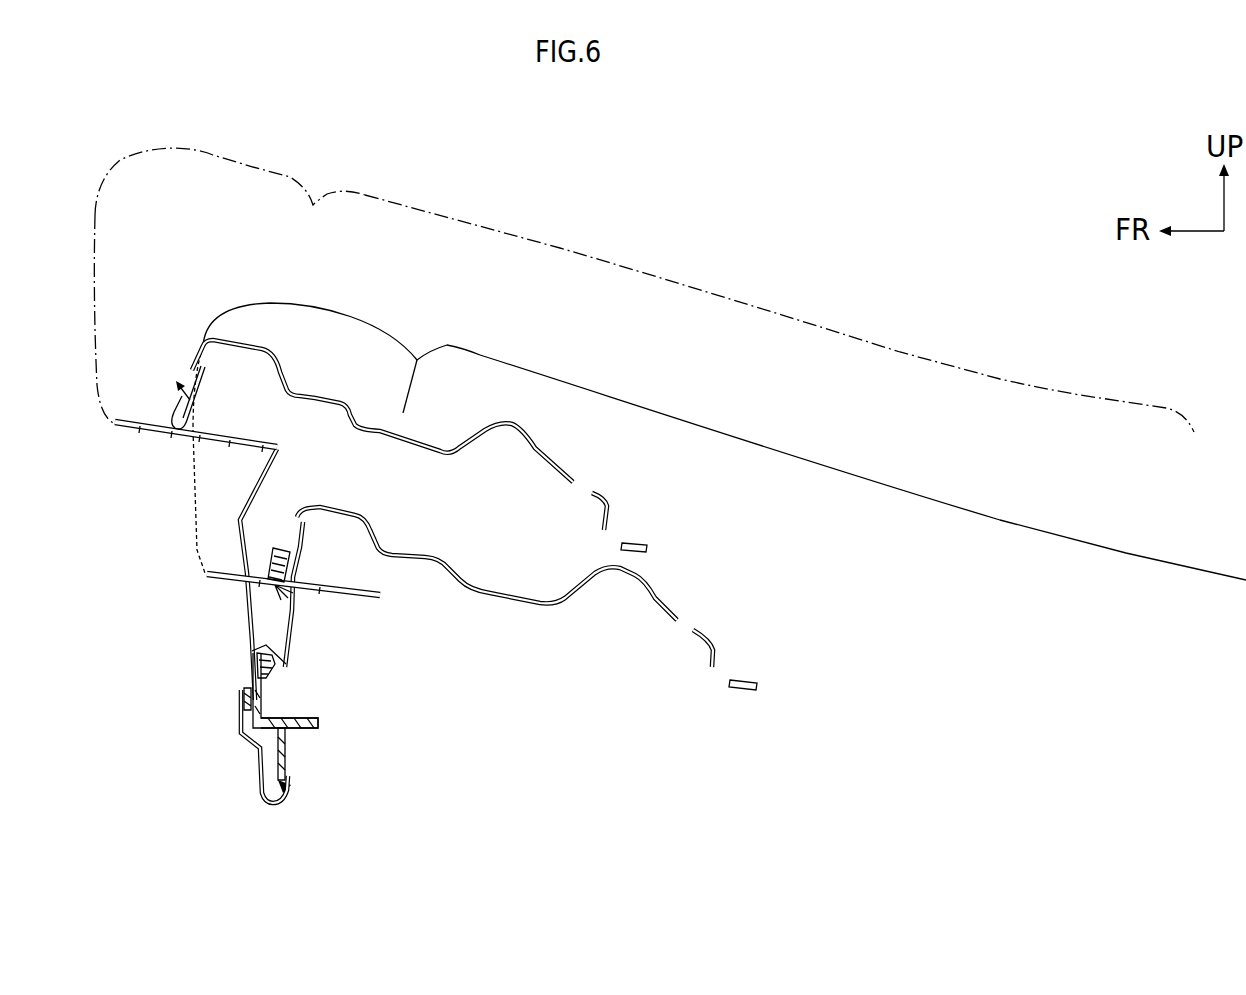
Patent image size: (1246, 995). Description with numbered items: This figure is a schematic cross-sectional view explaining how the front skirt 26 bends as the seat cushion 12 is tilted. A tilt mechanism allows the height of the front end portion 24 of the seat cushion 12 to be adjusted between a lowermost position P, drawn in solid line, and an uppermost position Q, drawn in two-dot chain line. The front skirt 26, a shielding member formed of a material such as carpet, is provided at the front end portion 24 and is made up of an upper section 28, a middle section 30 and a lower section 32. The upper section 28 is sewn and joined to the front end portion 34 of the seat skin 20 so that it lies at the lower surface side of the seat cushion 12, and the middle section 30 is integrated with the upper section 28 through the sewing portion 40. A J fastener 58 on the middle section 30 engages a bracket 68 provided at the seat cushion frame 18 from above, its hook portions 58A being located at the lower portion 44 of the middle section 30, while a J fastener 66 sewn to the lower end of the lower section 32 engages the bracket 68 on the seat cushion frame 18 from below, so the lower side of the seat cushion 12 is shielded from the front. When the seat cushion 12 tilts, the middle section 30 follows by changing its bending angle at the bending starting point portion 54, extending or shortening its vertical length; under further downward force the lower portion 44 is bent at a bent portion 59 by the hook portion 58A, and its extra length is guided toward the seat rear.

The seat cushion 12 is at (673, 403).
The seat cushion frame 18 is at (303, 730).
The seat skin 20 is at (289, 303).
The front end portion 24 is at (383, 347).
The front skirt 26 is at (190, 602).
The upper section 28 is at (150, 432).
The middle section 30 is at (233, 547).
The lower section 32 is at (240, 733).
The front end portion of the seat skin 34 is at (229, 330).
The sewing portion 40 is at (280, 450).
The lower portion 44 is at (263, 645).
The bending starting point portion 54 is at (287, 553).
The J fastener 58 is at (250, 683).
The hook portions 58A is at (252, 657).
The bent portion 59 is at (287, 662).
The J fastener 66 is at (263, 803).
The bracket 68 is at (339, 756).
The lowermost position P is at (770, 433).
The uppermost position Q is at (810, 320).